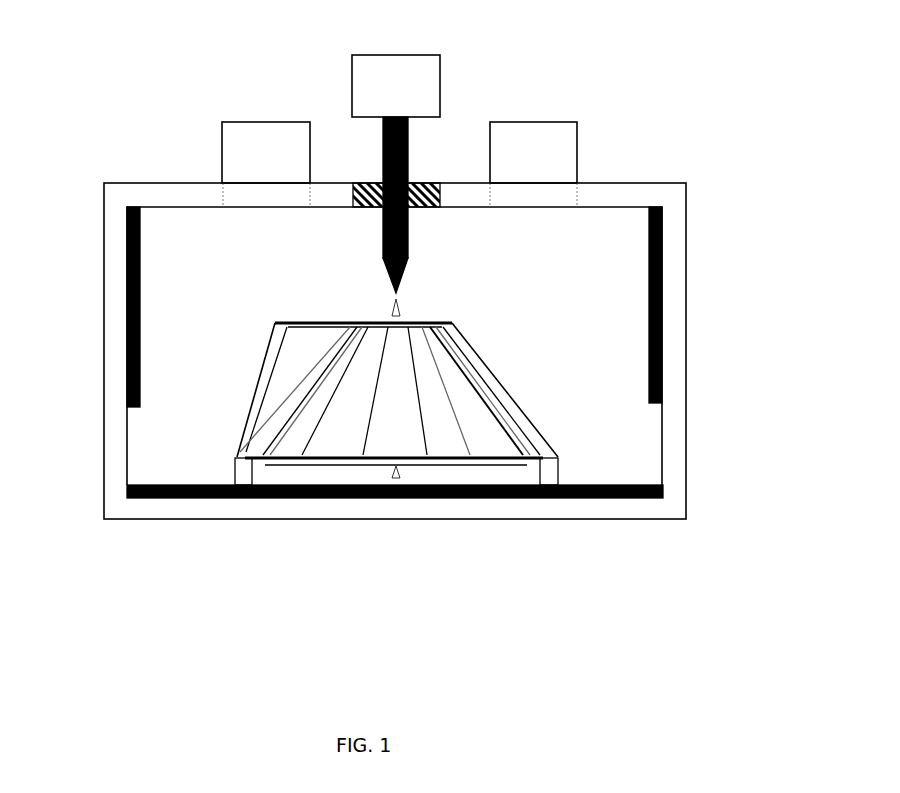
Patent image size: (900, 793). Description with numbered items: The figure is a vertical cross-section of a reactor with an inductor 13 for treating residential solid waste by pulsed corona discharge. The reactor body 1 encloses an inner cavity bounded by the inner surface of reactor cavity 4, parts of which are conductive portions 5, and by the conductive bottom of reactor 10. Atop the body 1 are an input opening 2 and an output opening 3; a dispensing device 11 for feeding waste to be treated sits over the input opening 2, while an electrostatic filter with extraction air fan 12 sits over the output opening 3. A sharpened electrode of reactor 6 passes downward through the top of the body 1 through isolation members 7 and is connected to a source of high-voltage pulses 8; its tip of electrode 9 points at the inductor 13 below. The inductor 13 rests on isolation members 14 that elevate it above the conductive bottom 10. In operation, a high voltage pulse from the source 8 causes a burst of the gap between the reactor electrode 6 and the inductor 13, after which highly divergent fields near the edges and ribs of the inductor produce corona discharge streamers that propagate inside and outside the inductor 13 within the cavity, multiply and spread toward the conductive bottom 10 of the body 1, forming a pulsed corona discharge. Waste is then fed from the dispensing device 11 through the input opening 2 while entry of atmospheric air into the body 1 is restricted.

The reactor body 1 is at (677, 314).
The input opening 2 is at (265, 195).
The output opening 3 is at (552, 193).
The inner surface of reactor cavity 4 is at (180, 212).
The conductive portions of inner surface of reactor cavity 5 is at (143, 318).
The sharpened electrode of reactor 6 is at (408, 153).
The isolation members 7 is at (373, 207).
The source of high-voltage pulses 8 is at (398, 83).
The tip of electrode of reactor 9 is at (406, 256).
The conductive bottom of reactor 10 is at (430, 500).
The dispensing device for feeding waste to be treated 11 is at (258, 150).
The electrostatic filter with extraction air fan 12 is at (545, 155).
The inductor 13 is at (520, 397).
The isolation members to elevate inductor above conductive bottom of reactor 14 is at (241, 479).